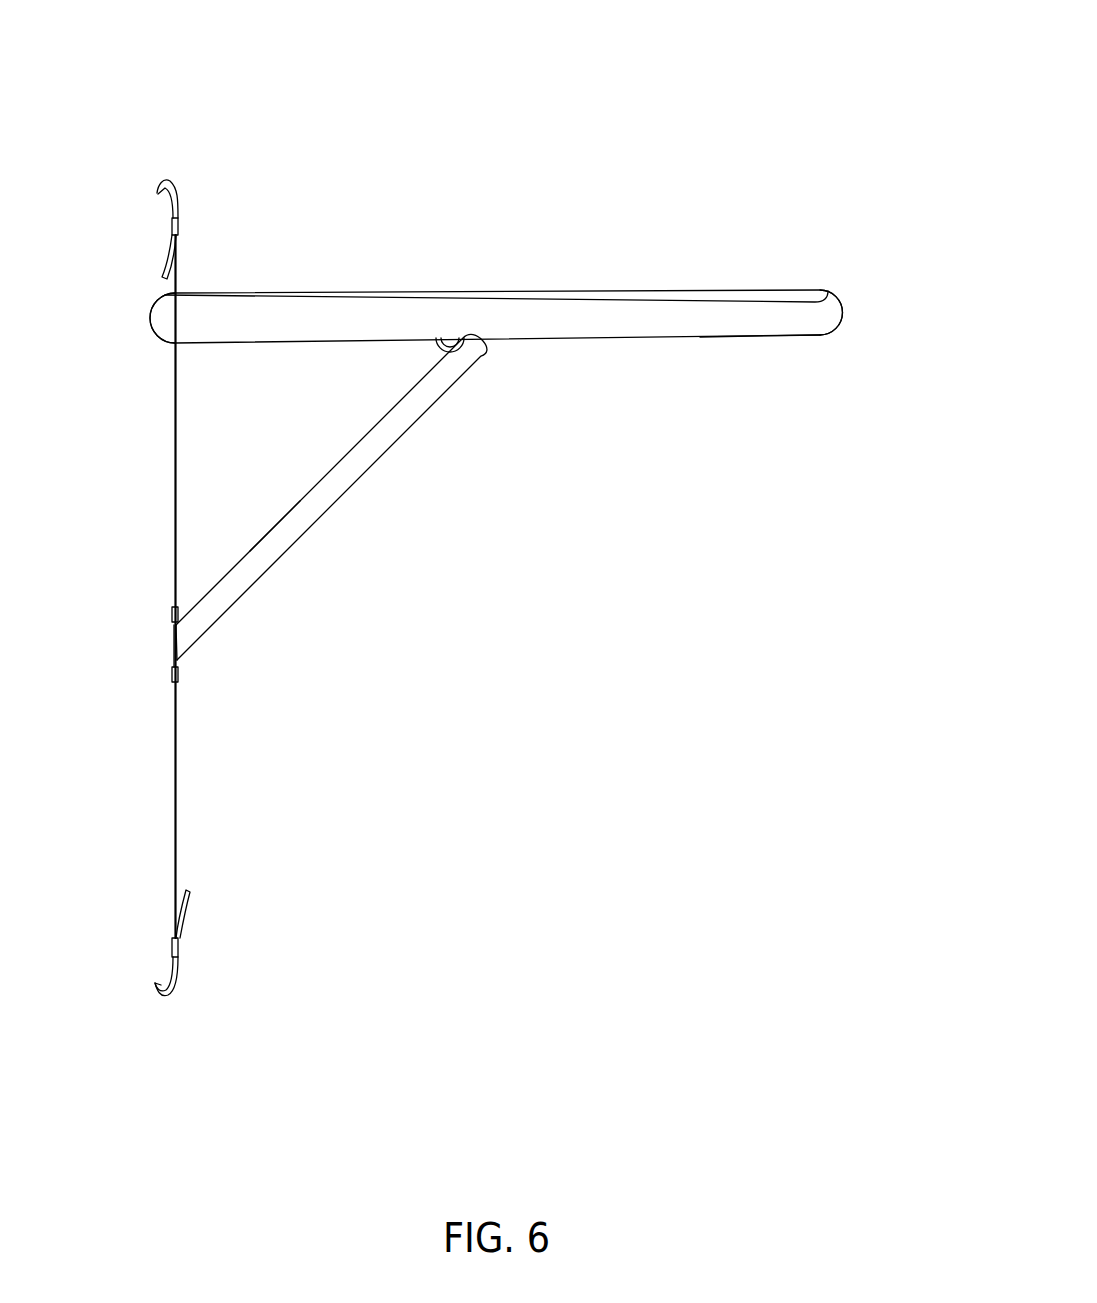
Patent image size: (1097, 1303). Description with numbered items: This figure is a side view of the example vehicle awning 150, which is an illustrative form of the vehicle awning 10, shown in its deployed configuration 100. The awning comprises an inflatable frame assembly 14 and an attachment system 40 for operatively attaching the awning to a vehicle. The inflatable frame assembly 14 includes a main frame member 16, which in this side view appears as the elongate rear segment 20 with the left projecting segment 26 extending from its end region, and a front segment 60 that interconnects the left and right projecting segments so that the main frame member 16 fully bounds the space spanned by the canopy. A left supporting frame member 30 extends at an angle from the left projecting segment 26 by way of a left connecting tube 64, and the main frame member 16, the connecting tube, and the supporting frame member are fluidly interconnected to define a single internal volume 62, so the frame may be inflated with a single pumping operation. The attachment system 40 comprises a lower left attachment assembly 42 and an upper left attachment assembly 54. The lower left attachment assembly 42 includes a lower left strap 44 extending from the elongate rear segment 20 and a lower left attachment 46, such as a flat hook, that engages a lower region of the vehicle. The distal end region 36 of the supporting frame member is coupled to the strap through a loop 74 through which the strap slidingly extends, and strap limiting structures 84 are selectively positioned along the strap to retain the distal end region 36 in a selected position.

The vehicle awning 10 is at (895, 56).
The deployed configuration 100 is at (888, 94).
The vehicle awning 150 is at (797, 59).
The inflatable frame assembly 14 is at (653, 242).
The main frame member 16 is at (524, 294).
The elongate rear segment 20 is at (150, 320).
The left projecting segment 26 is at (698, 317).
The front segment 60 is at (843, 312).
The single internal volume 62 is at (345, 307).
The left supporting frame member 30 is at (365, 462).
The right-support distal end region 36 is at (183, 648).
The lower left strap 44 is at (176, 461).
The left connecting tube 64 is at (430, 341).
The attachment system 40 is at (158, 598).
The lower left attachment assembly 42 is at (179, 770).
The lower left attachment 46 is at (180, 946).
The upper left attachment assembly 54 is at (180, 231).
The right loop 74 is at (172, 645).
The right-strap limiting structures 84 is at (172, 612).